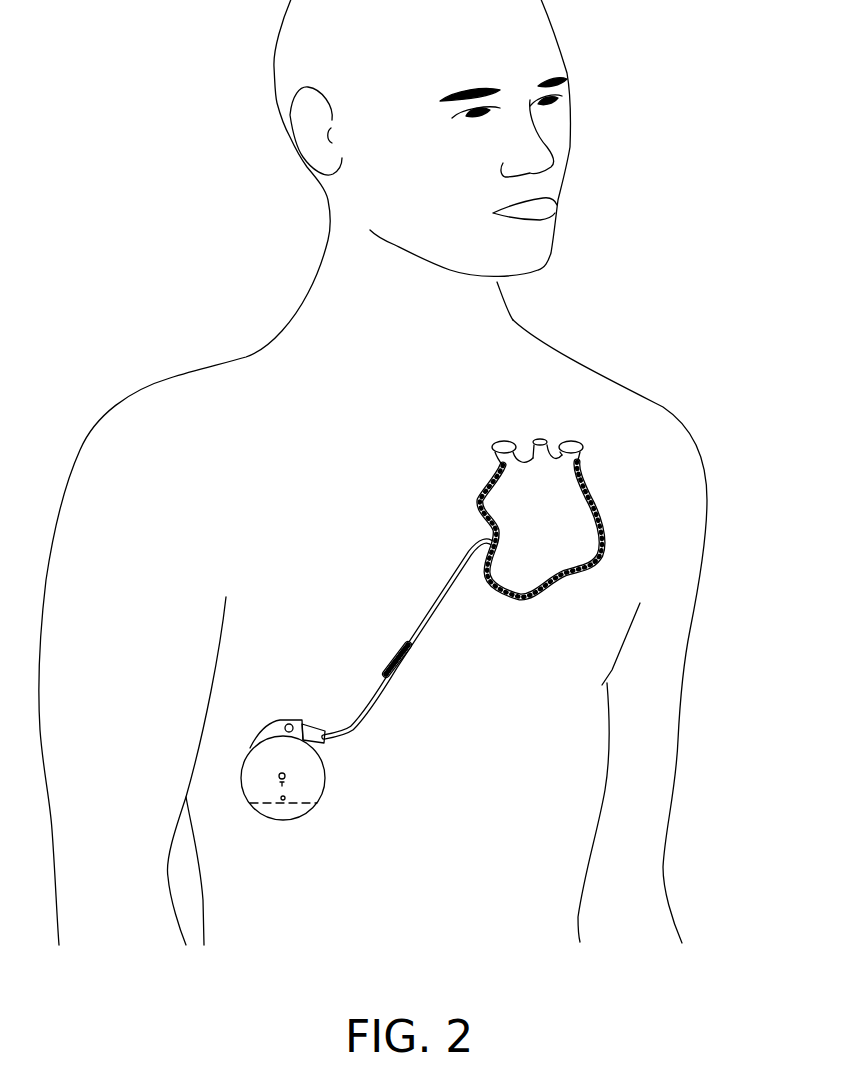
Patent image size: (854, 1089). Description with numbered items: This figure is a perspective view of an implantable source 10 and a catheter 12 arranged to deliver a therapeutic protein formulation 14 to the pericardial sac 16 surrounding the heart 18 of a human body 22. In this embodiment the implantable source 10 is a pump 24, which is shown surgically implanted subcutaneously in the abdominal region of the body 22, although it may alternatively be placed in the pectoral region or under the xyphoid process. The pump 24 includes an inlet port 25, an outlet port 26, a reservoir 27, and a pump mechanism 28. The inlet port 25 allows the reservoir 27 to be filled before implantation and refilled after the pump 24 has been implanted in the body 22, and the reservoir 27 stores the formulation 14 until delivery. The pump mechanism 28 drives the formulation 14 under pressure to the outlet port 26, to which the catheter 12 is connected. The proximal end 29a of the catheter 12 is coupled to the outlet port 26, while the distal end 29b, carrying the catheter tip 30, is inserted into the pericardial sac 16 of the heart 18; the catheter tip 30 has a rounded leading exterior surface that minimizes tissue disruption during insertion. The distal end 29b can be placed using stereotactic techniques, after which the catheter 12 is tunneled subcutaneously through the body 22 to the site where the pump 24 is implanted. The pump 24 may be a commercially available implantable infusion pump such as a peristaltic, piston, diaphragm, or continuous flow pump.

The implantable source 10 is at (178, 842).
The catheter 12 is at (420, 638).
The therapeutic protein formulation 14 is at (382, 668).
The pericardial sac 16 is at (600, 510).
The heart 18 is at (560, 537).
The human body 22 is at (246, 357).
The pump 24 is at (310, 826).
The inlet port 25 is at (262, 771).
The outlet port 26 is at (283, 720).
The reservoir 27 is at (281, 812).
The pump mechanism 28 is at (248, 780).
The proximal end 29a is at (330, 748).
The distal end 29b is at (440, 588).
The catheter tip 30 is at (483, 497).